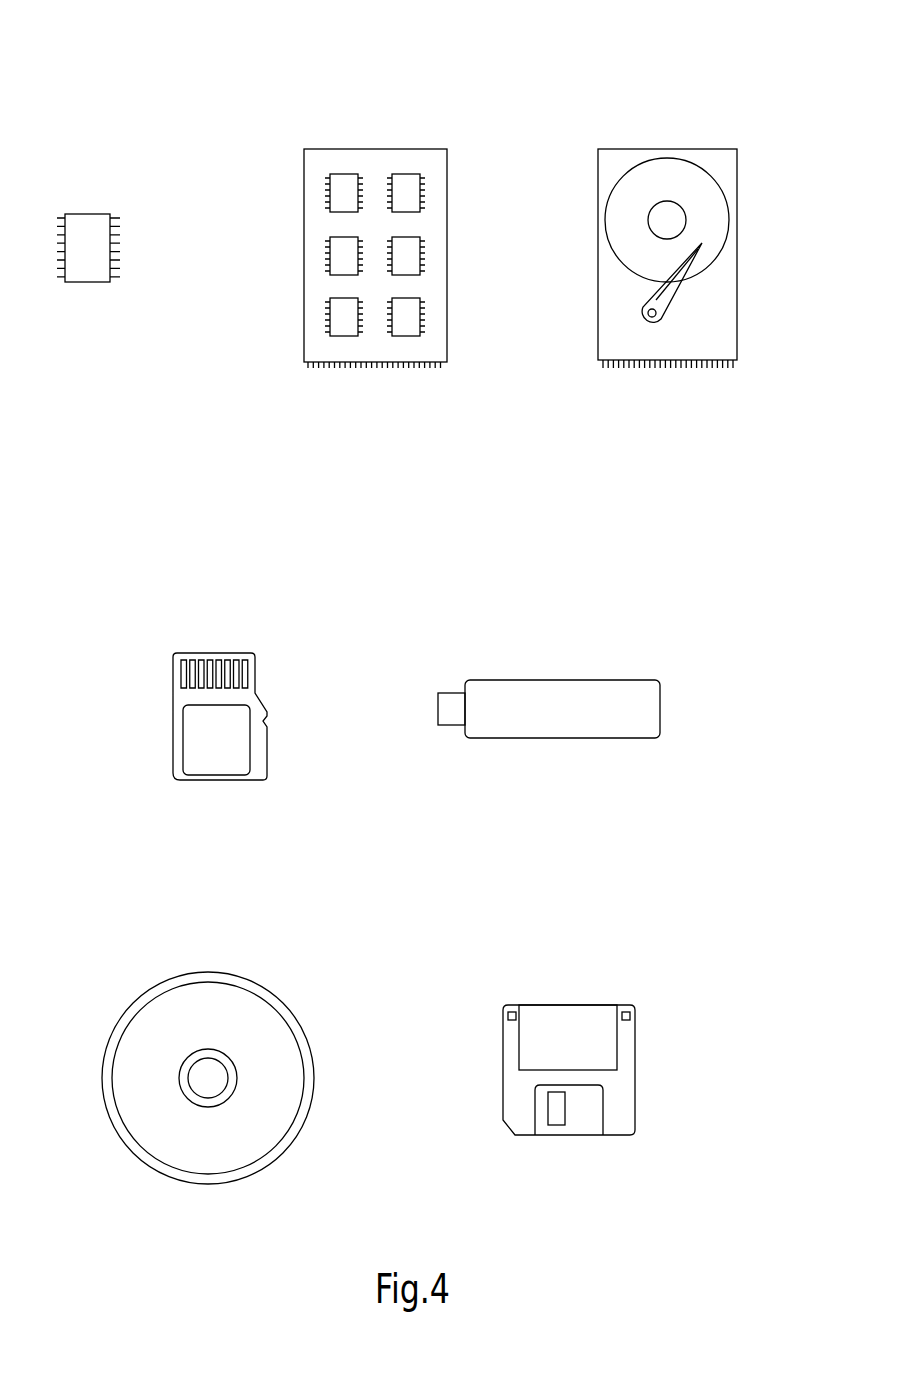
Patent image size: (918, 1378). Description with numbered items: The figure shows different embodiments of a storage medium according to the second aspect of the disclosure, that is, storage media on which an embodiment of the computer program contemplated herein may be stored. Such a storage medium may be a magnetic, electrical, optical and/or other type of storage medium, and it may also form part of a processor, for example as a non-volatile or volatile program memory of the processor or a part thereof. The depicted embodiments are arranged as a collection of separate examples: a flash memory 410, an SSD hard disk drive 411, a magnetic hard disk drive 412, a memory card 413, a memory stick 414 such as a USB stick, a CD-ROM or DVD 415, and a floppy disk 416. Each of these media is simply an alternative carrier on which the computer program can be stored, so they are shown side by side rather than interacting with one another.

The flash memory 410 is at (113, 177).
The SSD hard disk drive 411 is at (448, 110).
The magnetic hard disk drive 412 is at (738, 110).
The memory card 413 is at (255, 620).
The memory stick 414 is at (633, 642).
The CD-ROM or DVD 415 is at (295, 967).
The floppy disk 416 is at (628, 965).